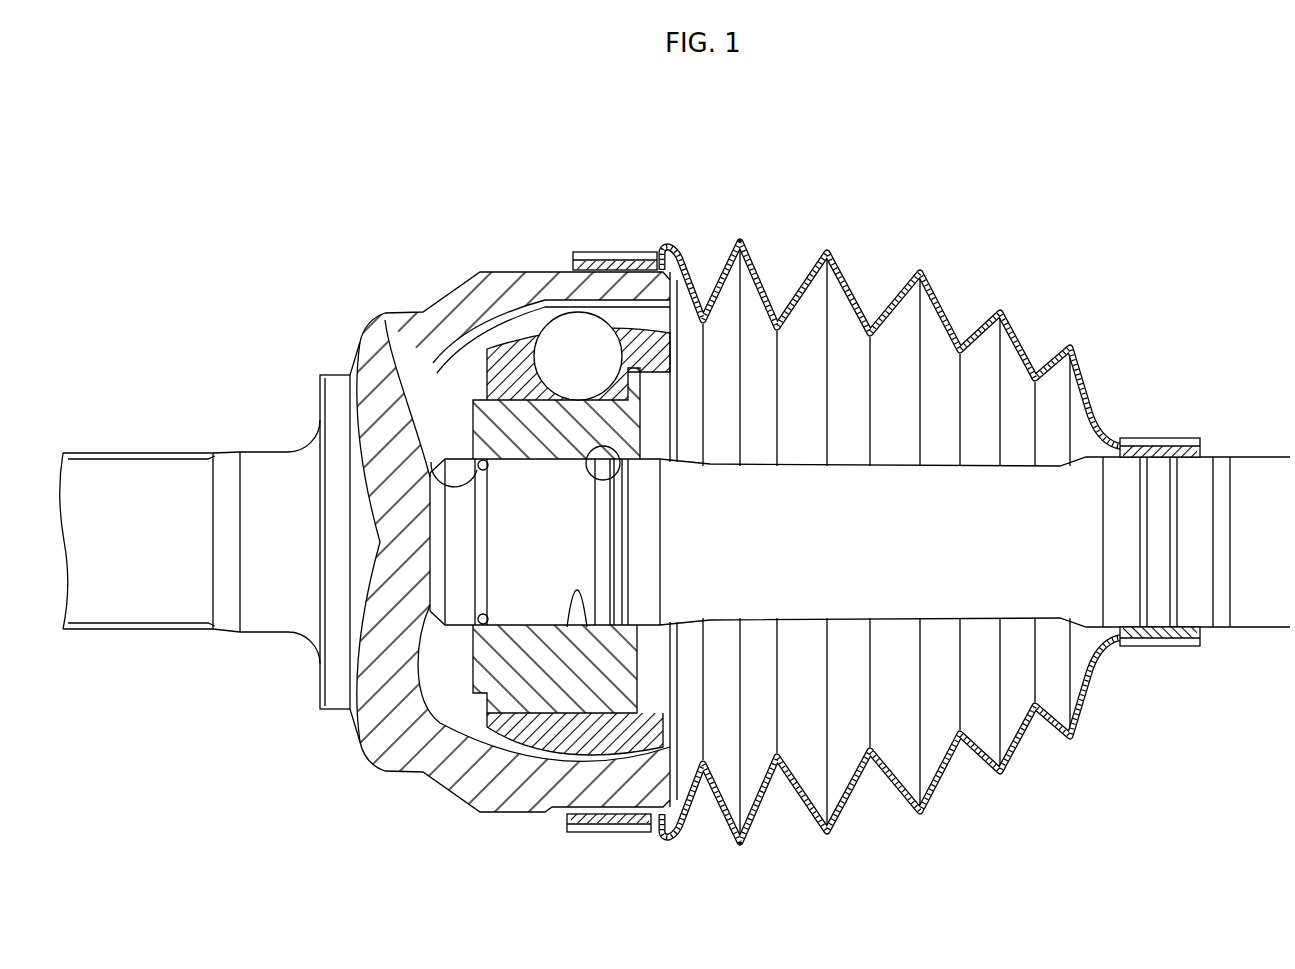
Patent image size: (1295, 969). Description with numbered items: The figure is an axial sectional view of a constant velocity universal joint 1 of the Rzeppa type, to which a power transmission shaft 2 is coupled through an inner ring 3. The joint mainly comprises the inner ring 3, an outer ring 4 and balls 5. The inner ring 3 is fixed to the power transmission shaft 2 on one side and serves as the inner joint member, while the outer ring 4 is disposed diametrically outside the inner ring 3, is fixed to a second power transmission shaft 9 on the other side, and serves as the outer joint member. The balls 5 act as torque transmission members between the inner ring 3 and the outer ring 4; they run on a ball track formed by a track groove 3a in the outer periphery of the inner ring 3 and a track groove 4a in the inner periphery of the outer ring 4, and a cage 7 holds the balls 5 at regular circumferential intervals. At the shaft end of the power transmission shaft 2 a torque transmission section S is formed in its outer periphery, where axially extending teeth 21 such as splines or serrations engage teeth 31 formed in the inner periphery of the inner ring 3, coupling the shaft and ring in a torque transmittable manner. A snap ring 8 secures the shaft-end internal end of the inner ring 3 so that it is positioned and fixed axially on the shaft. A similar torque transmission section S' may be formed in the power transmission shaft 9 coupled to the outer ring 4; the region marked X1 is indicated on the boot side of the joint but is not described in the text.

The constant velocity universal joint 1 is at (975, 268).
The power transmission shaft 2 is at (913, 590).
The inner ring 3 is at (470, 392).
The track groove 3a is at (657, 250).
The outer ring 4 is at (475, 294).
The track groove 4a is at (561, 308).
The balls 5 is at (554, 335).
The cage 7 is at (553, 748).
The snap ring 8 is at (372, 345).
The power transmission shaft 9 is at (150, 598).
The teeth 21 is at (537, 632).
The teeth 31 is at (583, 626).
The torque transmission section S is at (516, 321).
The torque transmission section S' is at (118, 405).
The boot pleat portion X1 is at (701, 316).